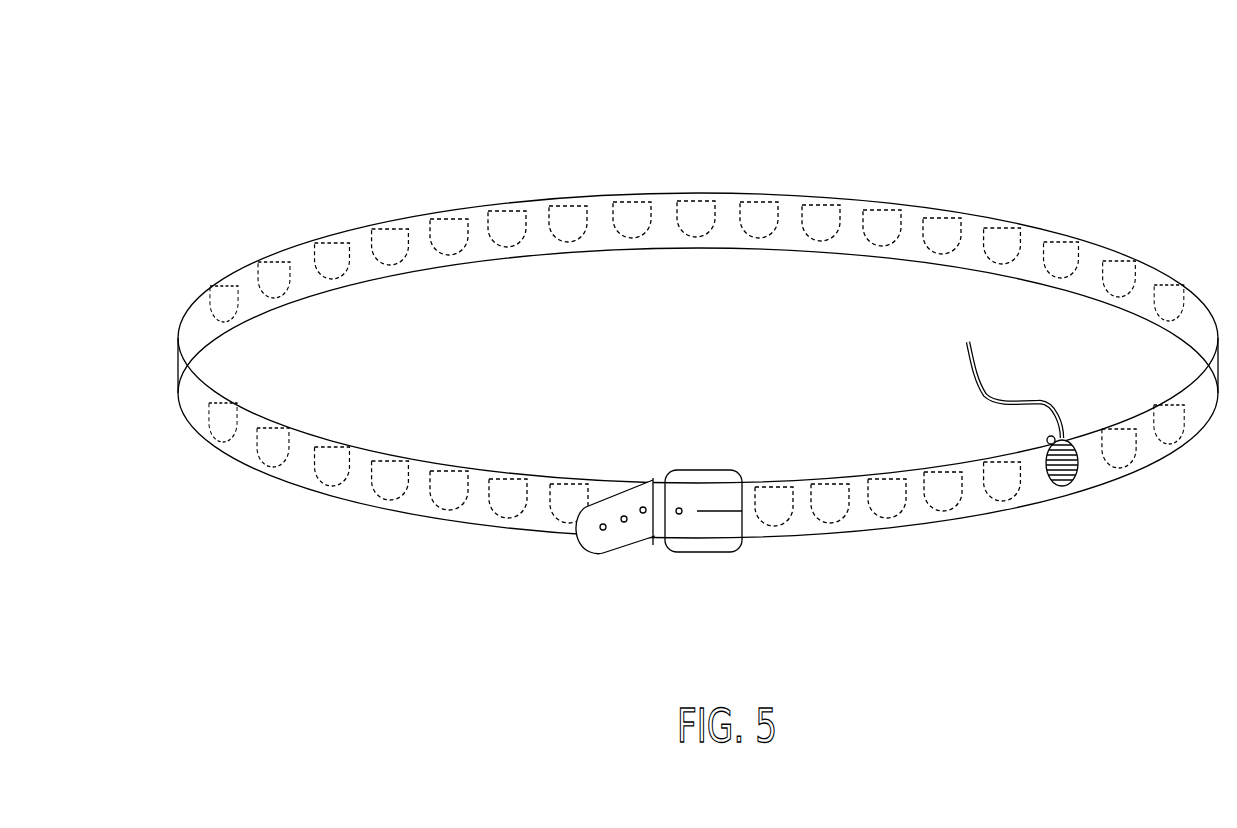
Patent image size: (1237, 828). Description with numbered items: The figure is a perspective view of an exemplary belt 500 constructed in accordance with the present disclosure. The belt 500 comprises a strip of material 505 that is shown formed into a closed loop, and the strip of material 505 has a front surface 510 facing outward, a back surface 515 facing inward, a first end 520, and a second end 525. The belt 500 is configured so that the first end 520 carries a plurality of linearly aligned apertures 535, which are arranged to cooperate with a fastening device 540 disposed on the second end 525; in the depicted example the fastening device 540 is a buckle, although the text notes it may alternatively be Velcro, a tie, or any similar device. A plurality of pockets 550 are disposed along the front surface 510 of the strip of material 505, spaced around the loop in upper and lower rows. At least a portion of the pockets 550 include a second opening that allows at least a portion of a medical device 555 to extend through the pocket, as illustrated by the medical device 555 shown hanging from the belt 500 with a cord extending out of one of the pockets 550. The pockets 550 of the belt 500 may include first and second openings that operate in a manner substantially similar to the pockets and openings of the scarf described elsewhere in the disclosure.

The belt 500 is at (701, 352).
The strip of material 505 is at (1093, 250).
The front surface 510 is at (1159, 494).
The back surface 515 is at (447, 288).
The first end 520 is at (651, 452).
The second end 525 is at (720, 558).
The linearly aligned apertures 535 is at (624, 523).
The fastening device 540 is at (742, 543).
The pockets 550 is at (370, 588).
The medical device 555 is at (1077, 467).